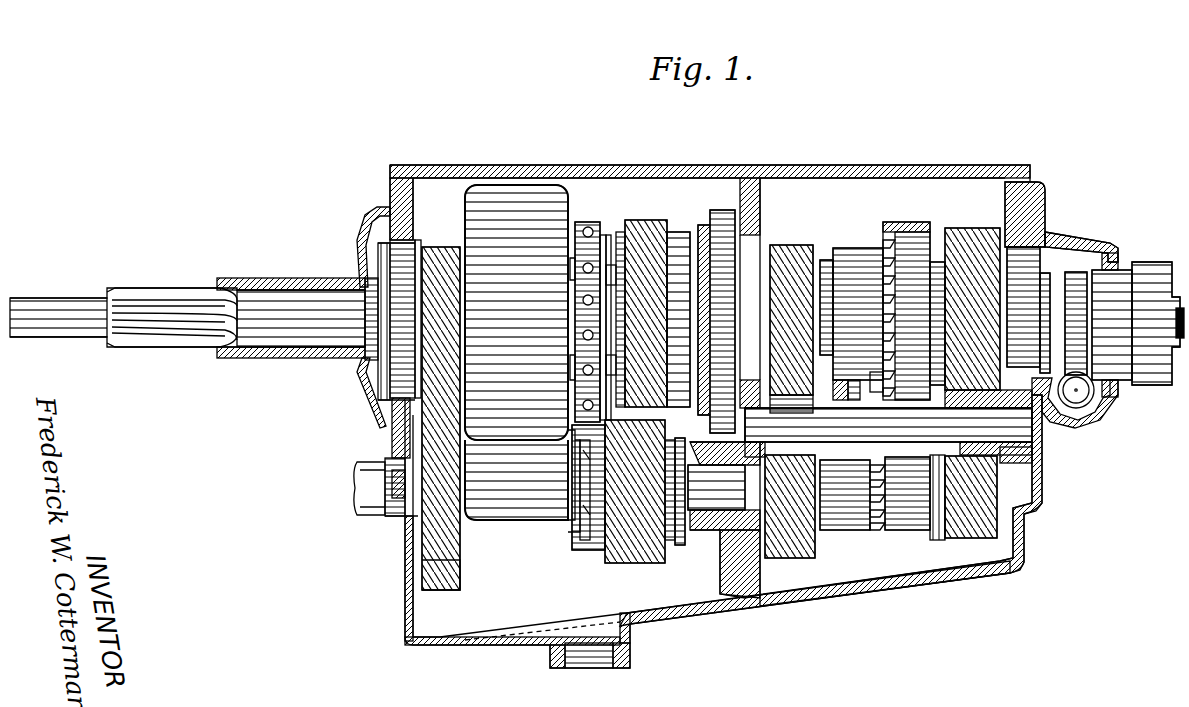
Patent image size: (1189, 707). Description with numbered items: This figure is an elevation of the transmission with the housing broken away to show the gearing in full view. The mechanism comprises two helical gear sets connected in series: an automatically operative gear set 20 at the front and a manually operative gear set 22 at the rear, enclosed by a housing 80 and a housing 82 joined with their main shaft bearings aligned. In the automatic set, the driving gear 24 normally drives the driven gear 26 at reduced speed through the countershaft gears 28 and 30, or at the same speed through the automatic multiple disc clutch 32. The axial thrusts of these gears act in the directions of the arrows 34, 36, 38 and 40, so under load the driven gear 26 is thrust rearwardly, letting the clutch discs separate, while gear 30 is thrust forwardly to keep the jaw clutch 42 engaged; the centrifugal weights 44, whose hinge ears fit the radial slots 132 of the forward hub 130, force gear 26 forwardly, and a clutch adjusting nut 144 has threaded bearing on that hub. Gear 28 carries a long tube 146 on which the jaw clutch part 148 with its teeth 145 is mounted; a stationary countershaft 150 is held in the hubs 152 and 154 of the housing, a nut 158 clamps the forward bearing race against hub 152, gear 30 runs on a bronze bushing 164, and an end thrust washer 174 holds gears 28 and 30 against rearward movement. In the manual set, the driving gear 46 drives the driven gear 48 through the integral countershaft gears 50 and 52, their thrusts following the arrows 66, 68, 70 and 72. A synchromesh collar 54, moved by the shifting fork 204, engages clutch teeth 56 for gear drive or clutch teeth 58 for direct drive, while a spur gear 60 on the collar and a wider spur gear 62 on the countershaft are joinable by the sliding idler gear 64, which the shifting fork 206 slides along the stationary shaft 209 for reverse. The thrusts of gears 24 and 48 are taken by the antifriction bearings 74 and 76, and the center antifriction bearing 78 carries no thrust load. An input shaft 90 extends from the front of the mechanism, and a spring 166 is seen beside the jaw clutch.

The automatically operative gear set 20 is at (537, 592).
The manually operative gear set 22 is at (862, 556).
The driving gear 24 is at (450, 250).
The driven gear 26 is at (660, 220).
The countershaft gear 28 is at (455, 580).
The countershaft gear 30 is at (630, 560).
The automatic multiple disc clutch 32 is at (545, 210).
The arrow 34 is at (452, 238).
The arrow 36 is at (641, 212).
The arrow 38 is at (422, 607).
The arrow 40 is at (663, 580).
The jaw clutch 42 is at (587, 501).
The centrifugally operative weights 44 is at (703, 232).
The driving gear 46 is at (818, 248).
The driven gear 48 is at (990, 235).
The countershaft gear 50 is at (820, 535).
The countershaft gear 52 is at (952, 528).
The synchromesh collar 54 is at (860, 250).
The clutch teeth 56 is at (937, 262).
The clutch teeth 58 is at (826, 258).
The spur gear 60 is at (886, 288).
The spur gear 62 is at (872, 528).
The sliding idler gear 64 is at (865, 378).
The arrow 66 is at (812, 234).
The arrow 68 is at (948, 215).
The arrow 70 is at (770, 562).
The arrow 72 is at (975, 552).
The antifriction bearing 74 is at (385, 262).
The antifriction bearing 76 is at (1047, 242).
The center antifriction bearing 78 is at (770, 232).
The housing 80 is at (705, 614).
The housing 82 is at (800, 596).
The input shaft 90 is at (305, 300).
The forward hub 130 is at (606, 320).
The radial slots 132 is at (607, 275).
The clutch adjusting nut 144 is at (592, 222).
The teeth 145 is at (574, 522).
The tube 146 is at (520, 516).
The jaw clutch part 148 is at (574, 540).
The countershaft 150 is at (397, 465).
The hub 152 is at (405, 518).
The hub 154 is at (712, 532).
The nut 158 is at (368, 490).
The bronze bushing 164 is at (679, 448).
The spring 166 is at (597, 490).
The end thrust washer 174 is at (684, 448).
The shifting fork 204 is at (895, 222).
The shifting fork 206 is at (884, 322).
The stationary shaft 209 is at (1040, 420).